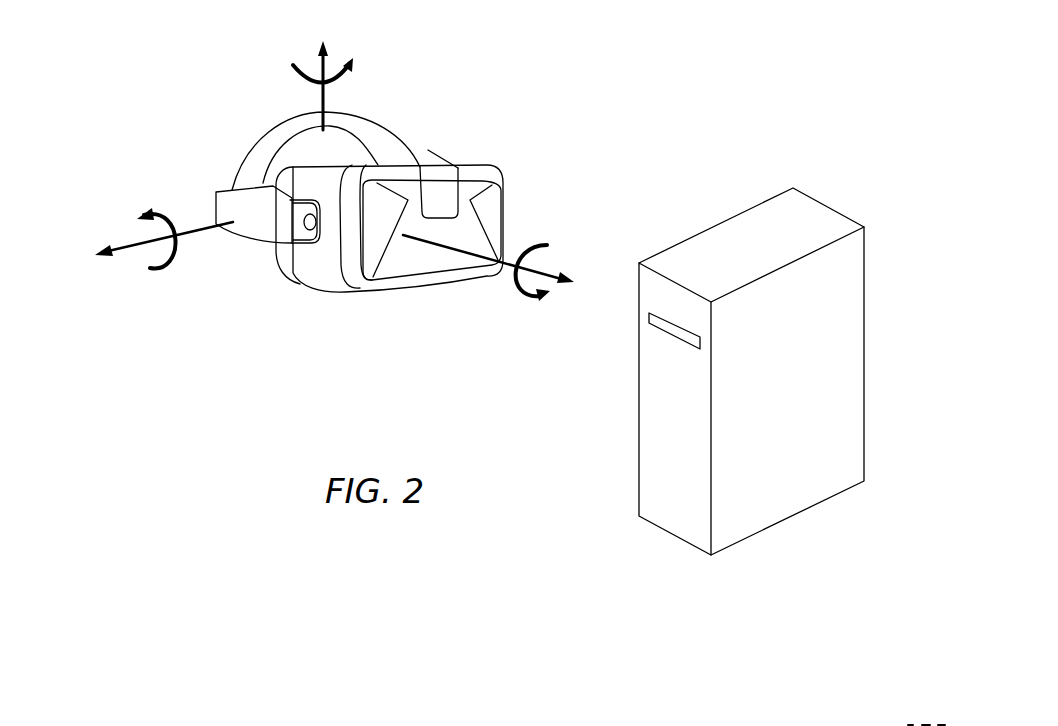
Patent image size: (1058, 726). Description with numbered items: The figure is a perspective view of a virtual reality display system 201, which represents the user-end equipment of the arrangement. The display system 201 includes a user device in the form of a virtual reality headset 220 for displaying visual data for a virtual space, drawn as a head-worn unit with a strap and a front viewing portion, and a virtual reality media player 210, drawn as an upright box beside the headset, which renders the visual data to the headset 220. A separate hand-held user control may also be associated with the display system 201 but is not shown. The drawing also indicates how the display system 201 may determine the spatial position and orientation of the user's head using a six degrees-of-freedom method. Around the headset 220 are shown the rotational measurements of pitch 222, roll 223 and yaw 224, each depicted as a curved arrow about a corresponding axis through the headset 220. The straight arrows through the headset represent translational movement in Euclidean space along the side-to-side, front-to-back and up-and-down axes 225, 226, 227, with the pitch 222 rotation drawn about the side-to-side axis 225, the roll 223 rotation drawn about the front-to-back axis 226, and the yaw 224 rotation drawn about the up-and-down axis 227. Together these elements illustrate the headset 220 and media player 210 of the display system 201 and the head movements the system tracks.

The virtual reality display system 201 is at (627, 88).
The virtual reality media player 210 is at (803, 509).
The virtual reality headset 220 is at (421, 288).
The pitch 222 is at (175, 267).
The roll 223 is at (533, 243).
The yaw 224 is at (293, 67).
The side-to-side axis 225 is at (120, 238).
The front-to-back axis 226 is at (499, 263).
The up-and-down axis 227 is at (328, 102).